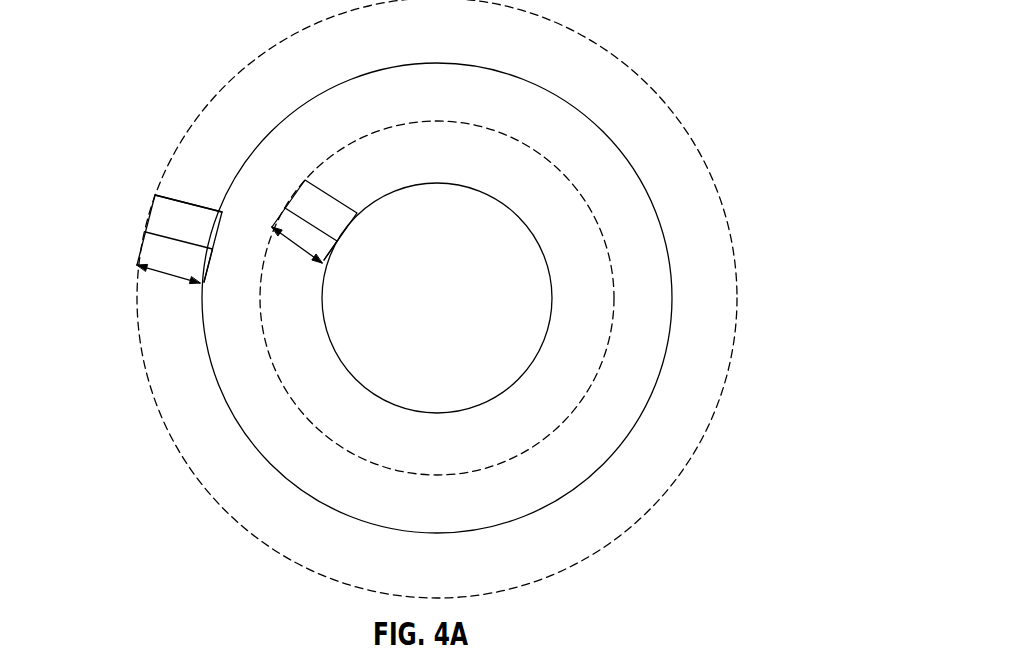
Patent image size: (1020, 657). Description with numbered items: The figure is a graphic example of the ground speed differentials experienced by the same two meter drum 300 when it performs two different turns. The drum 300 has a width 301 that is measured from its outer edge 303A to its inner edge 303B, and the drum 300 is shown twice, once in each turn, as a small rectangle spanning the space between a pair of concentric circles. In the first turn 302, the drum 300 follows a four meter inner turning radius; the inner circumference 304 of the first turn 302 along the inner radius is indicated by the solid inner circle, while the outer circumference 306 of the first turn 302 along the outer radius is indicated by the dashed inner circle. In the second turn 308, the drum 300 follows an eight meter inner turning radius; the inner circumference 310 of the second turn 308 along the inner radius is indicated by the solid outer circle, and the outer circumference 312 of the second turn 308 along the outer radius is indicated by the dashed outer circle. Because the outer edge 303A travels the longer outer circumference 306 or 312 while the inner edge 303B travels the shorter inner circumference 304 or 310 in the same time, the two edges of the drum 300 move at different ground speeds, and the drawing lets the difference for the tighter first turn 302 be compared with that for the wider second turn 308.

The drum 300 is at (173, 190).
The width 301 is at (167, 278).
The first turn 302 is at (345, 190).
The outer edge 303A is at (153, 207).
The inner edge 303B is at (218, 236).
The inner circumference 304 is at (480, 191).
The outer circumference 306 is at (530, 141).
The second turn 308 is at (210, 190).
The inner circumference 310 is at (628, 160).
The outer circumference 312 is at (648, 86).